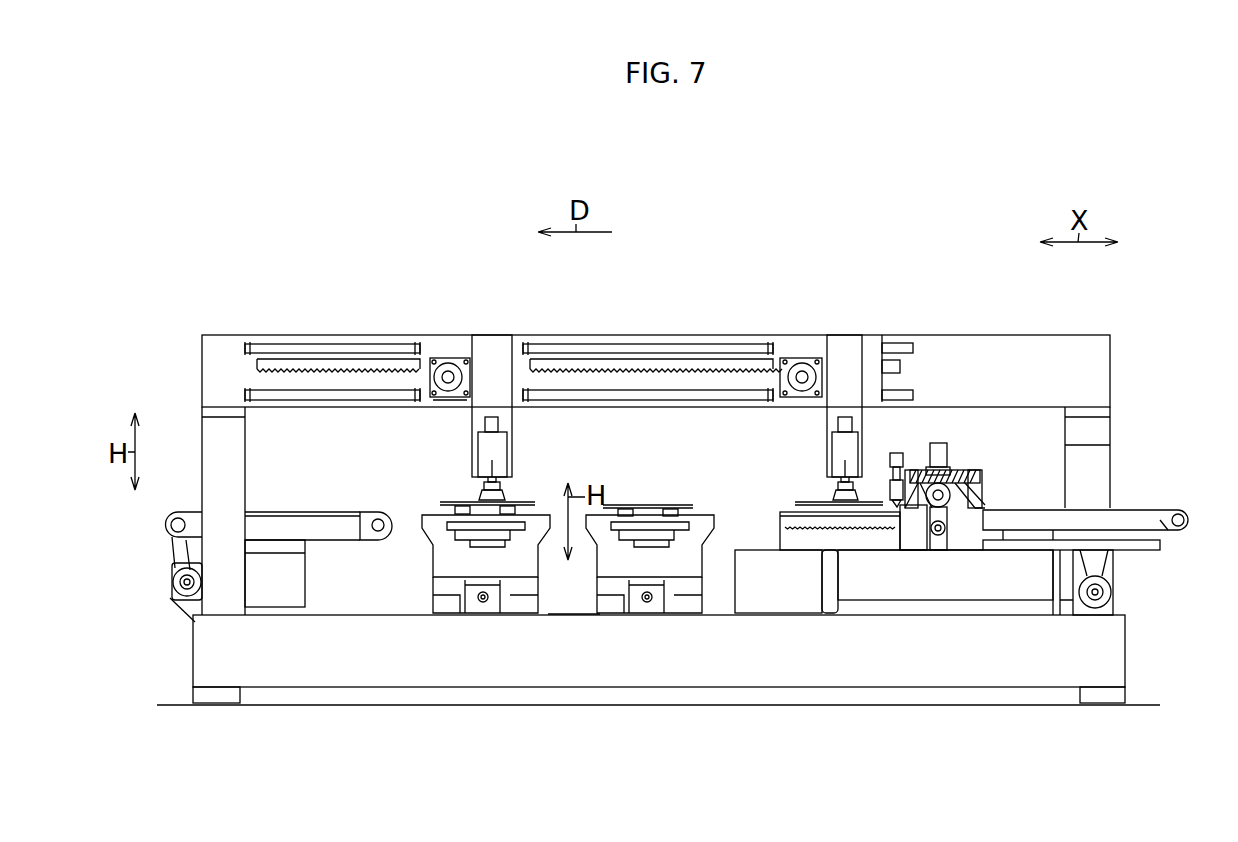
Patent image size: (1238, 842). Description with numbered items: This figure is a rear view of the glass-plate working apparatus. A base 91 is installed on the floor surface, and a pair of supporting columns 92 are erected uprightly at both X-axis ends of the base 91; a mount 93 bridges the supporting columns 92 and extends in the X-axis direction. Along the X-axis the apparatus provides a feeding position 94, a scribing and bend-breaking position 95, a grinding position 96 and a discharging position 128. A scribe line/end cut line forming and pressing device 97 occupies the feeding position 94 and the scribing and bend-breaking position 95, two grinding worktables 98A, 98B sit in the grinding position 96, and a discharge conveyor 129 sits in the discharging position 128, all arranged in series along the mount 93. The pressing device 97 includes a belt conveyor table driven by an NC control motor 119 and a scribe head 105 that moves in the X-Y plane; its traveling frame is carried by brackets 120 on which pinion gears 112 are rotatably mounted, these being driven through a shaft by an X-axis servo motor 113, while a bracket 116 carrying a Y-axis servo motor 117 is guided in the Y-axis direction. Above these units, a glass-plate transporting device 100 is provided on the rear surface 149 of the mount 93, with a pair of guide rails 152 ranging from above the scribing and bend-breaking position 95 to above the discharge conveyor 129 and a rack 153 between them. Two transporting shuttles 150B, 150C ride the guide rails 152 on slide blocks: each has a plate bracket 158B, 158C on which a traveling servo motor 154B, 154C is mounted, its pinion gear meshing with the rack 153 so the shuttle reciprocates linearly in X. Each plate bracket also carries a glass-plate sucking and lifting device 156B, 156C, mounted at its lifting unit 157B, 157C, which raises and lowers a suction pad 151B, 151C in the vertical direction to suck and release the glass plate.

The base 91 is at (713, 667).
The supporting columns 92 is at (217, 438).
The mount 93 is at (615, 343).
The feeding position 94 is at (1110, 510).
The scribing and bend-breaking position 95 is at (843, 507).
The grinding position 96 is at (570, 603).
The scribe line/end cut line forming and pressing device 97 is at (1006, 468).
The grinding worktable 98A is at (605, 562).
The grinding worktable 98B is at (442, 562).
The glass-plate transporting device 100 is at (870, 333).
The scribe head 105 is at (938, 443).
The pinion gear 112 is at (948, 530).
The X-axis servo motor 113 is at (953, 485).
The bracket 116 is at (963, 478).
The Y-axis servo motor 117 is at (957, 468).
The NC control motor 119 is at (1112, 592).
The brackets 120 is at (918, 523).
The discharging position 128 is at (273, 523).
The discharge conveyor 129 is at (287, 510).
The rear surface 149 is at (673, 350).
The transporting shuttle 150B is at (847, 352).
The transporting shuttle 150C is at (493, 355).
The suction pad 151B is at (832, 493).
The suction pad 151C is at (476, 492).
The guide rails 152 is at (245, 394).
The rack 153 is at (315, 363).
The traveling servo motor 154B is at (805, 362).
The traveling servo motor 154C is at (450, 360).
The glass-plate sucking and lifting device 156B is at (832, 455).
The glass-plate sucking and lifting device 156C is at (508, 440).
The lifting unit 157B is at (840, 467).
The lifting unit 157C is at (497, 460).
The plate bracket 158B is at (900, 452).
The plate bracket 158C is at (450, 400).